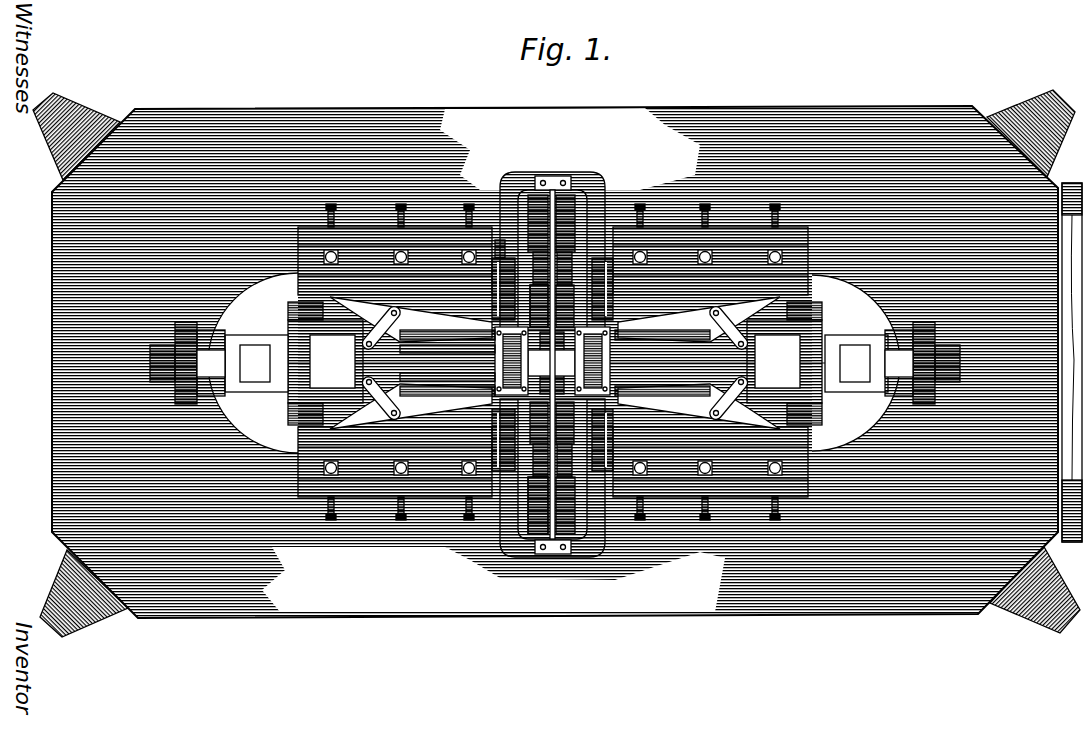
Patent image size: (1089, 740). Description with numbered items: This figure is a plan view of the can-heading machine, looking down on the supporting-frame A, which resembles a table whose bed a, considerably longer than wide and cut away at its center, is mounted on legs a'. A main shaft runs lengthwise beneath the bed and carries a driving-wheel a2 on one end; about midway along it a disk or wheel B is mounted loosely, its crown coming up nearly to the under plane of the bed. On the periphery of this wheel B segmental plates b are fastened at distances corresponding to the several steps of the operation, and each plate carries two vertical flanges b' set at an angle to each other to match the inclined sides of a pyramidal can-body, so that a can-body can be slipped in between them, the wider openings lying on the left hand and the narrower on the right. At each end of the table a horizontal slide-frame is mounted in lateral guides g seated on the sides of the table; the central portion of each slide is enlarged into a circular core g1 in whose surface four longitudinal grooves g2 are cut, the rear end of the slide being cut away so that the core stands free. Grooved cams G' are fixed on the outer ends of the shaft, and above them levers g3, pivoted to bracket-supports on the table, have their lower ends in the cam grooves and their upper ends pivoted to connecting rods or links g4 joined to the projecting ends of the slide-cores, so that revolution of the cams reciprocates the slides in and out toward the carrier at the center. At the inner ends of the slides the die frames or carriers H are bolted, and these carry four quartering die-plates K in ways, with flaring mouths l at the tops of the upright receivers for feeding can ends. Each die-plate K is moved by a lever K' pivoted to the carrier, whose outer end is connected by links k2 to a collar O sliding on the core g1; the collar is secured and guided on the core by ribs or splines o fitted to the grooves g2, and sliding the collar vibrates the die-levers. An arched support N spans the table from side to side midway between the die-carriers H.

The bed a is at (555, 362).
The legs a' is at (556, 363).
The driving-wheel a2 is at (1068, 349).
The supporting-frame A is at (50, 365).
The grooved cams G' is at (553, 362).
The lateral guides g is at (365, 260).
The arched support N is at (560, 196).
The die-plates K is at (520, 352).
The disk or wheel B is at (535, 420).
The segmental plates b is at (514, 433).
The vertical flanges b' is at (524, 531).
The flaring mouths l is at (512, 345).
The collar O is at (308, 334).
The levers g3 is at (262, 356).
The connecting rods or links g4 is at (265, 378).
The links k2 is at (551, 363).
The ribs or splines o is at (400, 312).
The die-levers K' is at (555, 362).
The circular core g1 is at (447, 354).
The longitudinal grooves g2 is at (447, 388).
The die frames or carriers H is at (497, 303).